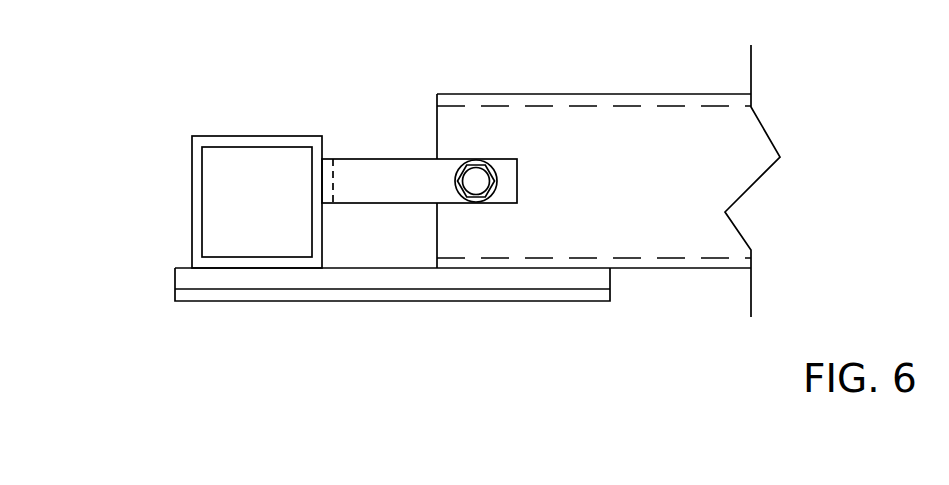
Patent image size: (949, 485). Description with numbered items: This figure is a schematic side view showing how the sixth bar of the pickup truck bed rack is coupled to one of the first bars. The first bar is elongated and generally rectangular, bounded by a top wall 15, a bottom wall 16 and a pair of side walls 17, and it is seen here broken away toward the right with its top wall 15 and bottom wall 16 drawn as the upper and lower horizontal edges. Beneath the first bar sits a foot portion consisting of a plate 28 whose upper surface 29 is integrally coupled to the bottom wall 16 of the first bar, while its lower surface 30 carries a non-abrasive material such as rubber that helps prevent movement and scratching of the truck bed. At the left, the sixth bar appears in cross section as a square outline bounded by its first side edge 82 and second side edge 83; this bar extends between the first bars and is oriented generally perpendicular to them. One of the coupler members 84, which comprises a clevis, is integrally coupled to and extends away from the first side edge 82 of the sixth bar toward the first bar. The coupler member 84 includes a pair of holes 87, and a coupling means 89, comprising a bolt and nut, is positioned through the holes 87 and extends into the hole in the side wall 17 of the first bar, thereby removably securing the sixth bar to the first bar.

The top wall 15 is at (653, 100).
The bottom wall 16 is at (662, 273).
The side walls 17 is at (720, 137).
The plate 28 is at (187, 278).
The upper surface 29 is at (377, 268).
The lower surface 30 is at (385, 303).
The first side edge 82 is at (320, 175).
The second side edge 83 is at (195, 167).
The coupler members 84 is at (386, 170).
The holes 87 is at (477, 161).
The coupling means 89 is at (477, 185).